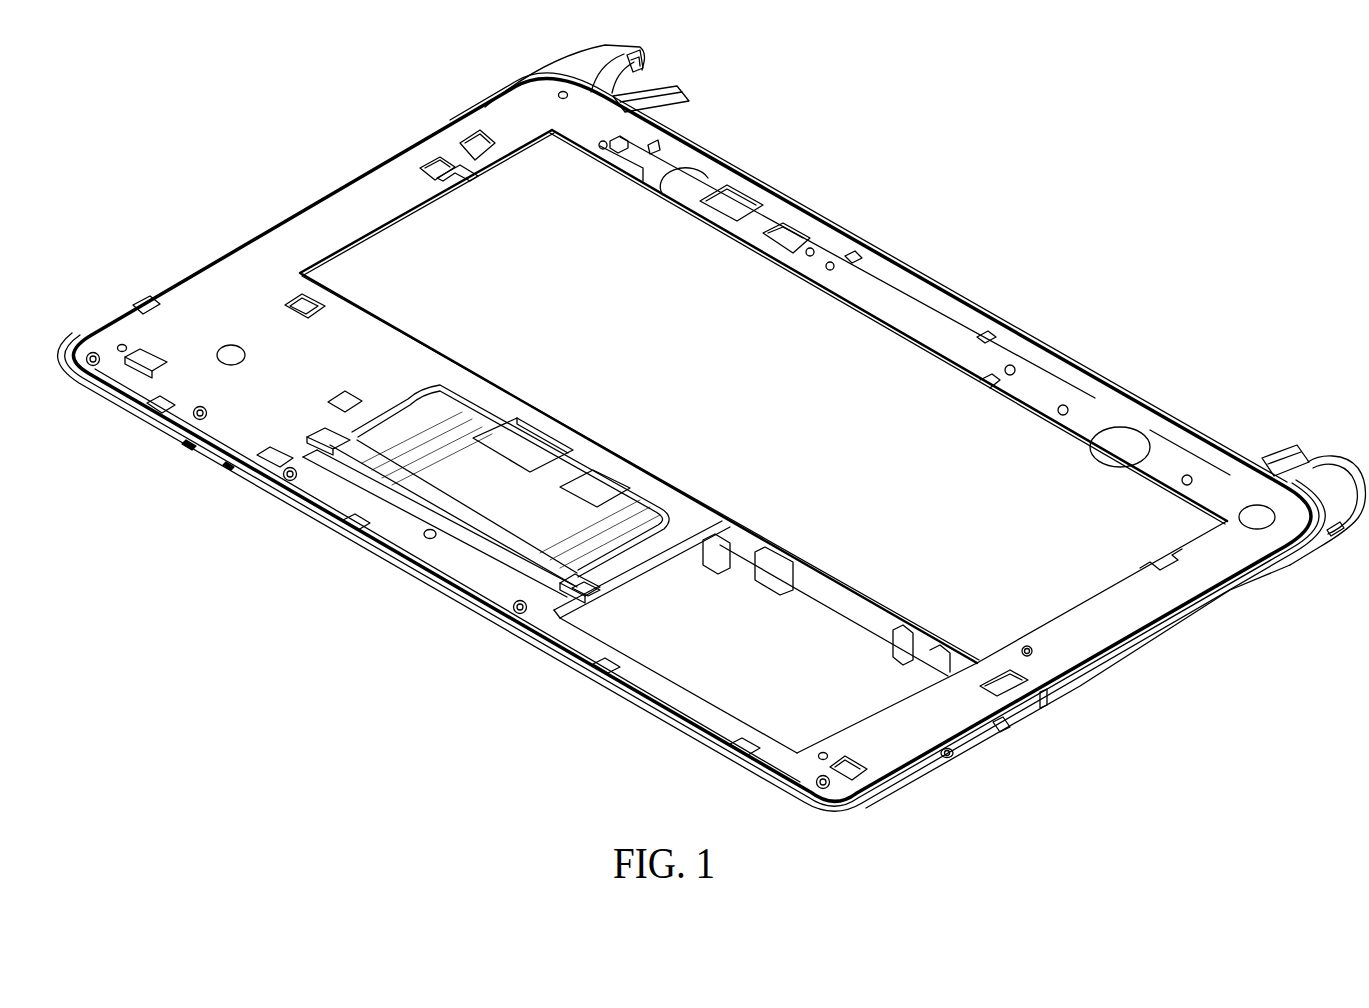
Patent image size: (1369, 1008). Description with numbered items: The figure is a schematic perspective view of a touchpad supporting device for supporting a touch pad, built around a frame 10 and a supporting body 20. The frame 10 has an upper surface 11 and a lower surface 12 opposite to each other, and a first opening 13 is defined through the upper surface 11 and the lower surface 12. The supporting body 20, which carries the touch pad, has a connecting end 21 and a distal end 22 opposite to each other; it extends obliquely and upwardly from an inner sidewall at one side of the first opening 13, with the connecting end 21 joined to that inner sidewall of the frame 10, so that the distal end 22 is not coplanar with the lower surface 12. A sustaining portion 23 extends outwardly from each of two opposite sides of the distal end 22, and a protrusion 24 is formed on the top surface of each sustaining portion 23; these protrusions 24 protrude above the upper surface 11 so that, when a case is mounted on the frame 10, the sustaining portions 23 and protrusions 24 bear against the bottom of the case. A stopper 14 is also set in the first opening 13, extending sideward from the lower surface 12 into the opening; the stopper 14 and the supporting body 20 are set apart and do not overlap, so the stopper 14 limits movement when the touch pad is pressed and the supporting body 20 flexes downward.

The frame 10 is at (323, 210).
The upper surface 11 is at (940, 720).
The lower surface 12 is at (895, 790).
The first opening 13 is at (357, 473).
The stopper 14 is at (407, 517).
The supporting body 20 is at (510, 468).
The connecting end 21 is at (500, 410).
The distal end 22 is at (493, 532).
The sustaining portion 23 is at (317, 440).
The protrusion 24 is at (590, 589).